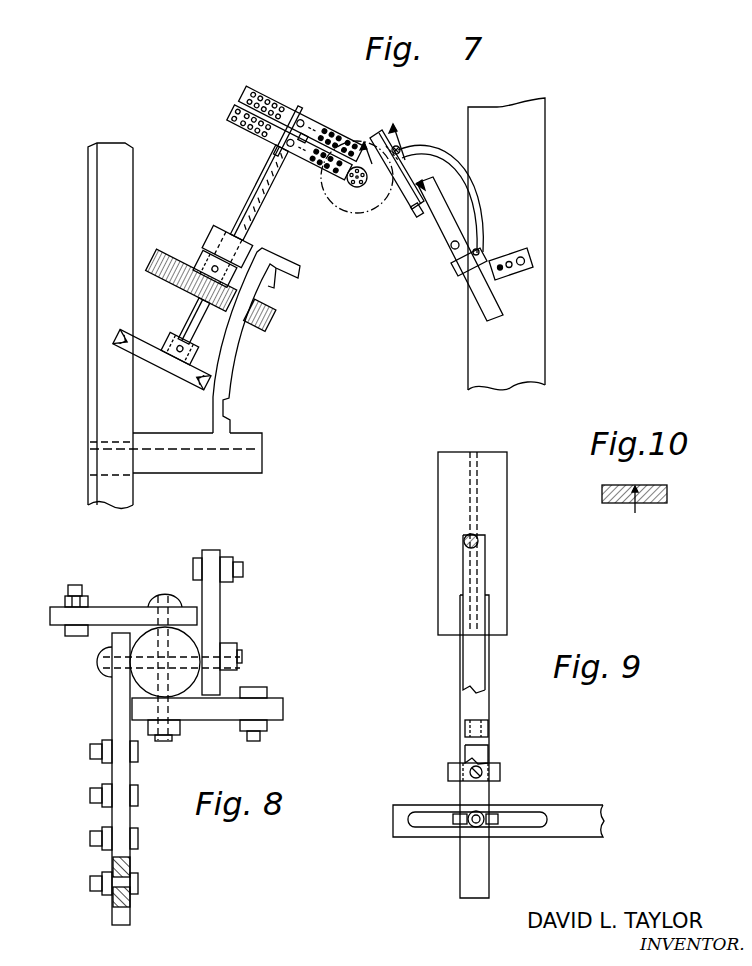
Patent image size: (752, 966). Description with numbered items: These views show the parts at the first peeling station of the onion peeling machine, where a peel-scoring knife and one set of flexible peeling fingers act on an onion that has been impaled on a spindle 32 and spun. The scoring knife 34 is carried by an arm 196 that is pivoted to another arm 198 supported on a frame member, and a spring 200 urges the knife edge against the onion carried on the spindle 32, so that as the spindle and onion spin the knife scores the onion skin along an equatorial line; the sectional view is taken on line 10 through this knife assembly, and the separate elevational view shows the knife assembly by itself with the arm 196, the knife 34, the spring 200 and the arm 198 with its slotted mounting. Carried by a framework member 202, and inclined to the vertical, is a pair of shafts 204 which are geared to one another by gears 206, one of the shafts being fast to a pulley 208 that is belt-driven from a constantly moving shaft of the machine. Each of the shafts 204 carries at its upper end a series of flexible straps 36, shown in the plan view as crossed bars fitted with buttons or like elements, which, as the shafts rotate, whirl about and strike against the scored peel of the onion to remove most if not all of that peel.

In FIG. 7, the section line 10 is at (376, 132).
In FIG. 7, the spindle 32 is at (366, 184).
In FIG. 7, the scoring knife 34 is at (416, 213).
In FIG. 9, the scoring knife 34 is at (484, 516).
In FIG. 10, the scoring knife 34 is at (635, 513).
In FIG. 7, the flexible straps 36 is at (292, 80).
In FIG. 8, the flexible straps 36 is at (114, 605).
In FIG. 7, the arm 196 is at (412, 178).
In FIG. 9, the arm 196 is at (447, 520).
In FIG. 10, the arm 196 is at (668, 490).
In FIG. 7, the arm 198 is at (490, 300).
In FIG. 9, the arm 198 is at (480, 788).
In FIG. 7, the spring 200 is at (478, 208).
In FIG. 9, the spring 200 is at (464, 668).
In FIG. 7, the framework member 202 is at (234, 458).
In FIG. 7, the shafts 204 is at (250, 212).
In FIG. 8, the shafts 204 is at (187, 643).
In FIG. 7, the gears 206 is at (268, 320).
In FIG. 7, the pulley 208 is at (180, 375).